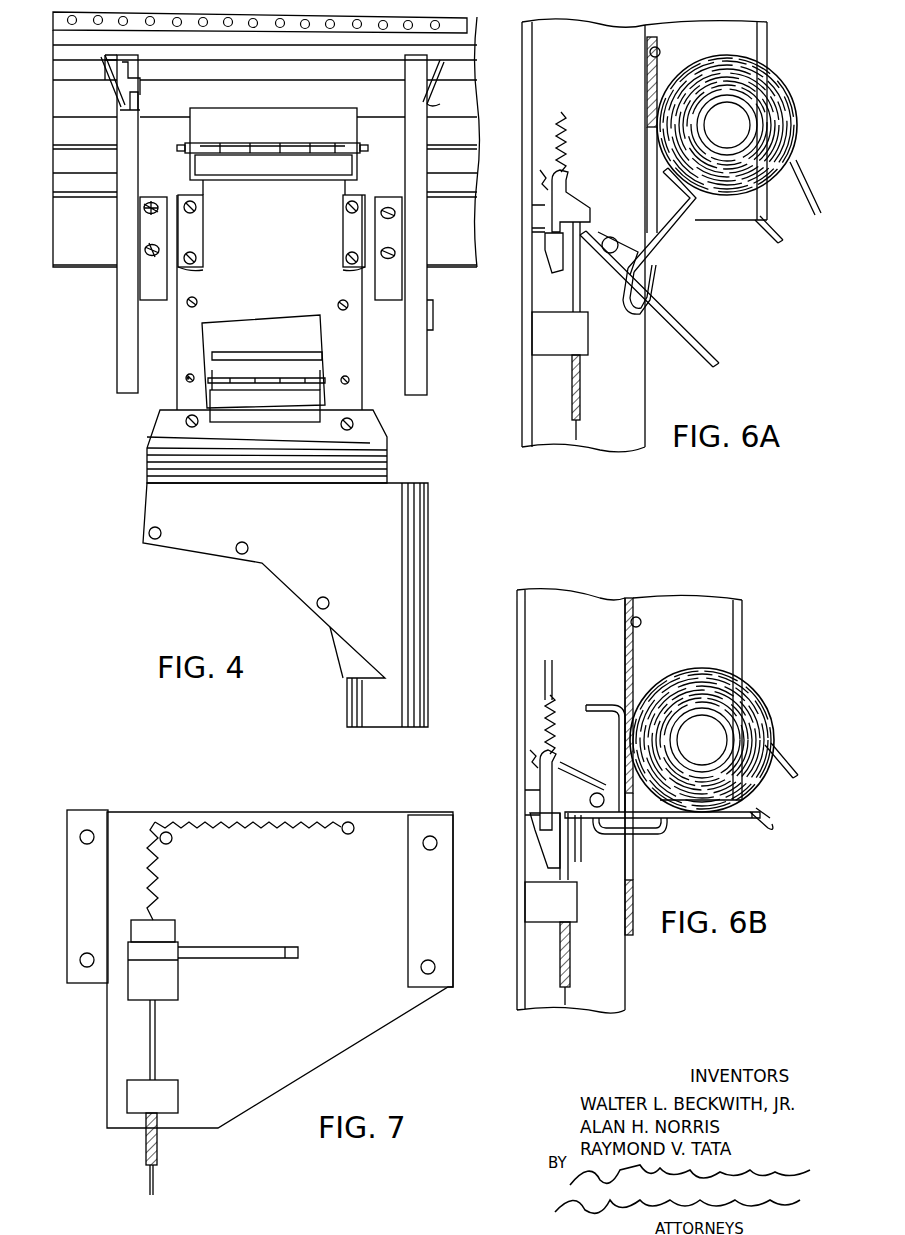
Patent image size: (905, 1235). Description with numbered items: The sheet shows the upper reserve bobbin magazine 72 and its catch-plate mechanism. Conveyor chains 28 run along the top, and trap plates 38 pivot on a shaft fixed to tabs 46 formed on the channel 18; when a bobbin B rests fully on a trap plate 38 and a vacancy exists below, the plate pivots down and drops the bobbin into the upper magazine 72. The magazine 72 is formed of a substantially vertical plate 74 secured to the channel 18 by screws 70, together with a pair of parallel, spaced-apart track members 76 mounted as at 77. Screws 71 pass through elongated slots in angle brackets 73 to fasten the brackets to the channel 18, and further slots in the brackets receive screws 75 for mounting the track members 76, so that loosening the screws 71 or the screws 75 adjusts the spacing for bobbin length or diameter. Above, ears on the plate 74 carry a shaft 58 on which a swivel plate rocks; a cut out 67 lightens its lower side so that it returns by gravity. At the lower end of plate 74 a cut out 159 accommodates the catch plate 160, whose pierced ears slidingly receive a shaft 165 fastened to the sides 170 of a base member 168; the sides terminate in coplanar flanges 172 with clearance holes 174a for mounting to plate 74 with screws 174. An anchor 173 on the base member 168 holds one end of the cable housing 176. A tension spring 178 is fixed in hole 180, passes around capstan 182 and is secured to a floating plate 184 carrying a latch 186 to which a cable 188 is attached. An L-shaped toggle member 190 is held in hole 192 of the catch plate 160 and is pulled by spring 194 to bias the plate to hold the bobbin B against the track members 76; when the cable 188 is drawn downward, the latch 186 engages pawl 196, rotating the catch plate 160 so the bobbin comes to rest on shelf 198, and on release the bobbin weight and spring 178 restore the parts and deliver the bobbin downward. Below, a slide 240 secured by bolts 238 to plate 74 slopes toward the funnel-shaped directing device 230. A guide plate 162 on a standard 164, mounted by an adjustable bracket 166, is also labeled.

In FIG. 4, the channel 18 is at (465, 226).
In FIG. 4, the chains 28 is at (455, 27).
In FIG. 4, the trap plate 38 is at (218, 95).
In FIG. 4, the tabs 46 is at (134, 103).
In FIG. 4, the shaft 58 is at (330, 142).
In FIG. 4, the cut out 67 is at (280, 158).
In FIG. 4, the screws 70 is at (346, 210).
In FIG. 4, the screws 71 is at (147, 210).
In FIG. 4, the upper reserve magazine 72 is at (104, 389).
In FIG. 4, the angle brackets 73 is at (150, 252).
In FIG. 4, the plate 74 is at (360, 392).
In FIG. 4, the screws 75 is at (433, 318).
In FIG. 4, the track members 76 is at (122, 322).
In FIG. 6A, the track members 76 is at (763, 53).
In FIG. 4, the mounting 77 is at (438, 104).
In FIG. 4, the cut out 159 is at (266, 322).
In FIG. 4, the guide plate 162 is at (308, 368).
In FIG. 4, the standard 164 is at (318, 392).
In FIG. 4, the adjustable bracket 166 is at (294, 342).
In FIG. 6A, the base member 168 is at (535, 392).
In FIG. 6B, the base member 168 is at (522, 666).
In FIG. 7, the base member 168 is at (326, 1024).
In FIG. 6A, the sides 170 is at (540, 445).
In FIG. 6A, the flanges 172 is at (645, 112).
In FIG. 6B, the flanges 172 is at (478, 945).
In FIG. 7, the flanges 172 is at (80, 938).
In FIG. 6A, the anchor 173 is at (580, 338).
In FIG. 6B, the anchor 173 is at (570, 914).
In FIG. 7, the anchor 173 is at (170, 1096).
In FIG. 4, the screws 174 is at (184, 382).
In FIG. 6A, the screws 174 is at (650, 54).
In FIG. 6B, the screws 174 is at (686, 697).
In FIG. 7, the clearance holes 174a is at (80, 838).
In FIG. 6A, the cable housing 176 is at (582, 410).
In FIG. 6B, the cable housing 176 is at (572, 978).
In FIG. 7, the cable housing 176 is at (144, 1150).
In FIG. 6A, the tension spring 178 is at (562, 156).
In FIG. 6B, the tension spring 178 is at (556, 710).
In FIG. 7, the tension spring 178 is at (155, 898).
In FIG. 7, the hole 180 is at (350, 835).
In FIG. 7, the capstan 182 is at (172, 840).
In FIG. 6B, the floating plate 184 is at (548, 762).
In FIG. 7, the floating plate 184 is at (175, 935).
In FIG. 6A, the latch 186 is at (577, 198).
In FIG. 6B, the latch 186 is at (550, 838).
In FIG. 7, the latch 186 is at (170, 984).
In FIG. 6A, the cable 188 is at (572, 280).
In FIG. 6B, the cable 188 is at (568, 1005).
In FIG. 7, the cable 188 is at (156, 1178).
In FIG. 6A, the toggle member 190 is at (640, 300).
In FIG. 6B, the toggle member 190 is at (648, 838).
In FIG. 6B, the hole 192 is at (665, 826).
In FIG. 6B, the spring 194 is at (560, 758).
In FIG. 6B, the pawl 196 is at (580, 838).
In FIG. 6A, the shelf 198 is at (685, 333).
In FIG. 6B, the shelf 198 is at (776, 822).
In FIG. 6A, the catch plate 160 is at (672, 228).
In FIG. 6B, the catch plate 160 is at (600, 700).
In FIG. 6A, the shaft 165 is at (612, 238).
In FIG. 4, the funnel 230 is at (231, 578).
In FIG. 4, the bolts 238 is at (355, 428).
In FIG. 4, the slide 240 is at (148, 462).
In FIG. 6A, the bobbin B is at (770, 100).
In FIG. 6B, the bobbin B is at (758, 712).